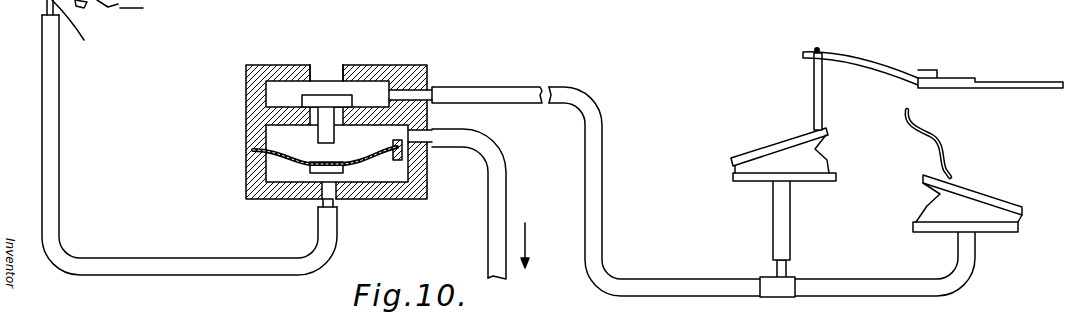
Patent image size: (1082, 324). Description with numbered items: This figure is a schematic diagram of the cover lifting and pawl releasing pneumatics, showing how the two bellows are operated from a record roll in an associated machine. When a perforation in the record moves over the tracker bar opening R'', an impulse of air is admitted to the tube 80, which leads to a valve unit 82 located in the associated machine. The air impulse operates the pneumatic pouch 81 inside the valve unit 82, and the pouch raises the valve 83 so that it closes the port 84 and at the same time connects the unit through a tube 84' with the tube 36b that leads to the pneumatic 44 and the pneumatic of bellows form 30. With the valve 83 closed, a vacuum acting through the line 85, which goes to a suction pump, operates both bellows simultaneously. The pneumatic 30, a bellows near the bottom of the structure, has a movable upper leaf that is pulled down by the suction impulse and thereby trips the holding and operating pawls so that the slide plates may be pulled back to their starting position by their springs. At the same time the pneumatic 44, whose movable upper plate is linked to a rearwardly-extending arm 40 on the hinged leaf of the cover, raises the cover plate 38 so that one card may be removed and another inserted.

The pneumatic of bellows form 30 is at (985, 213).
The tube 36b is at (645, 208).
The cover plate 38 is at (1010, 73).
The rearwardly-extending arm 40 is at (852, 53).
The pneumatic 44 is at (785, 157).
The tube 80 is at (133, 267).
The pneumatic pouch 81 is at (266, 144).
The valve unit 82 is at (246, 90).
The valve 83 is at (327, 97).
The port 84 is at (316, 54).
The tube 84' is at (487, 81).
The line 85 is at (495, 193).
The tracker bar opening R'' is at (84, 54).